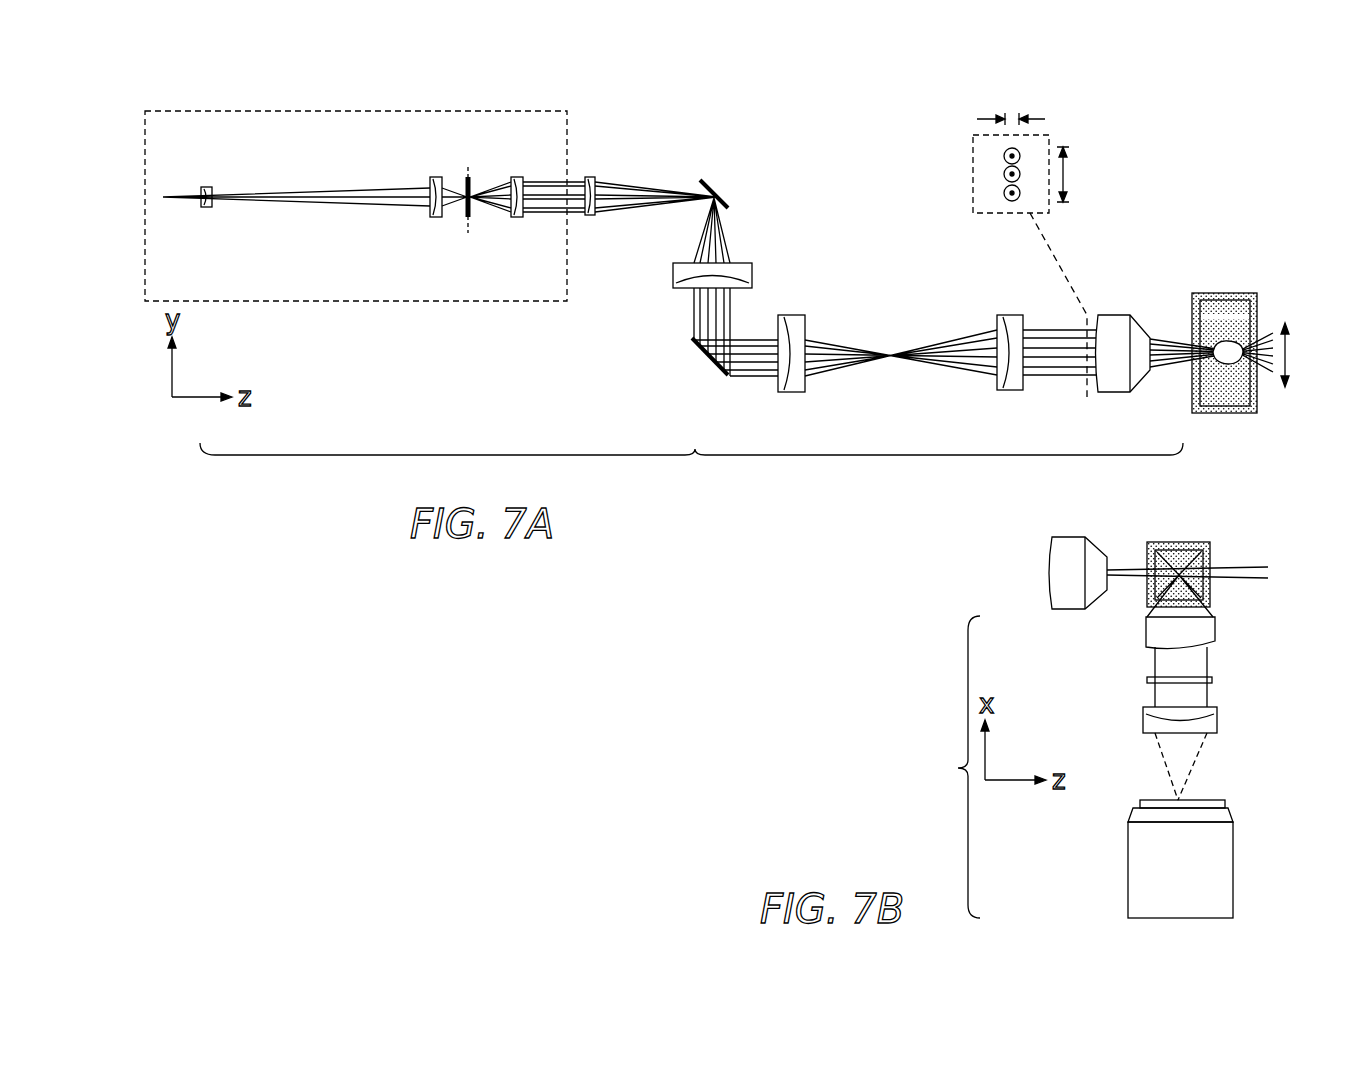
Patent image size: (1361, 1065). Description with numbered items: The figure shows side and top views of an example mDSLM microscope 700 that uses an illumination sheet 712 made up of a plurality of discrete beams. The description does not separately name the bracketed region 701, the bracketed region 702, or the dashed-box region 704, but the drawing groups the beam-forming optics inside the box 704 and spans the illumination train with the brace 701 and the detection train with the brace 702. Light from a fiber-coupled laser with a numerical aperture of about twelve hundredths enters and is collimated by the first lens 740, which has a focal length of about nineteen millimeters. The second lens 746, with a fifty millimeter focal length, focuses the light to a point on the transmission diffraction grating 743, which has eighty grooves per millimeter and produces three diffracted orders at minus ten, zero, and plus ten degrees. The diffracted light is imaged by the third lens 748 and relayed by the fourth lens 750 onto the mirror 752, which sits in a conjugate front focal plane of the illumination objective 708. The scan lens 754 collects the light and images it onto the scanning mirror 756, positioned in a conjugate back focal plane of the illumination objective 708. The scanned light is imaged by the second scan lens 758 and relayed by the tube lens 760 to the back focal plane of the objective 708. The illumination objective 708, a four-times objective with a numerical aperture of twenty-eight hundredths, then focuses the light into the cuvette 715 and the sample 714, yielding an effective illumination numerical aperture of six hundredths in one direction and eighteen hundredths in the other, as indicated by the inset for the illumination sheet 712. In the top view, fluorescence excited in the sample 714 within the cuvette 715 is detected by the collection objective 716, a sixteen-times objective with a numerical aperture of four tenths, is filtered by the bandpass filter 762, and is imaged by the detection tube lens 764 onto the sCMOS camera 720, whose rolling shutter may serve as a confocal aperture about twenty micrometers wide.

In FIG. 7A, the mDSLM microscope 700 is at (207, 35).
In FIG. 7B, the mDSLM microscope 700 is at (989, 537).
In FIG. 7A, the illumination path 701 is at (691, 472).
In FIG. 7B, the detection path 702 is at (942, 767).
In FIG. 7A, the beam shaping module 704 is at (214, 110).
In FIG. 7A, the illumination objective 708 is at (1141, 393).
In FIG. 7B, the illumination objective 708 is at (1070, 537).
In FIG. 7A, the illumination sheet 712 is at (977, 134).
In FIG. 7A, the sample 714 is at (1223, 366).
In FIG. 7B, the sample 714 is at (1195, 557).
In FIG. 7A, the cuvette 715 is at (1258, 306).
In FIG. 7B, the cuvette 715 is at (1147, 545).
In FIG. 7B, the collection objective 716 is at (1146, 632).
In FIG. 7B, the sCMOS camera 720 is at (1233, 870).
In FIG. 7A, the lens L1 740 is at (207, 209).
In FIG. 7A, the transmission diffraction grating DG 743 is at (473, 218).
In FIG. 7A, the lens L2 746 is at (436, 219).
In FIG. 7A, the lens L3 748 is at (519, 219).
In FIG. 7A, the lens L4 750 is at (591, 217).
In FIG. 7A, the mirror 752 is at (724, 194).
In FIG. 7A, the scan lens L5 754 is at (676, 276).
In FIG. 7A, the scanning mirror 756 is at (702, 362).
In FIG. 7A, the second scan lens L6 758 is at (792, 394).
In FIG. 7A, the tube lens L7 760 is at (1011, 392).
In FIG. 7B, the bandpass filter BP-F 762 is at (1146, 680).
In FIG. 7B, the tube lens L8 764 is at (1143, 722).